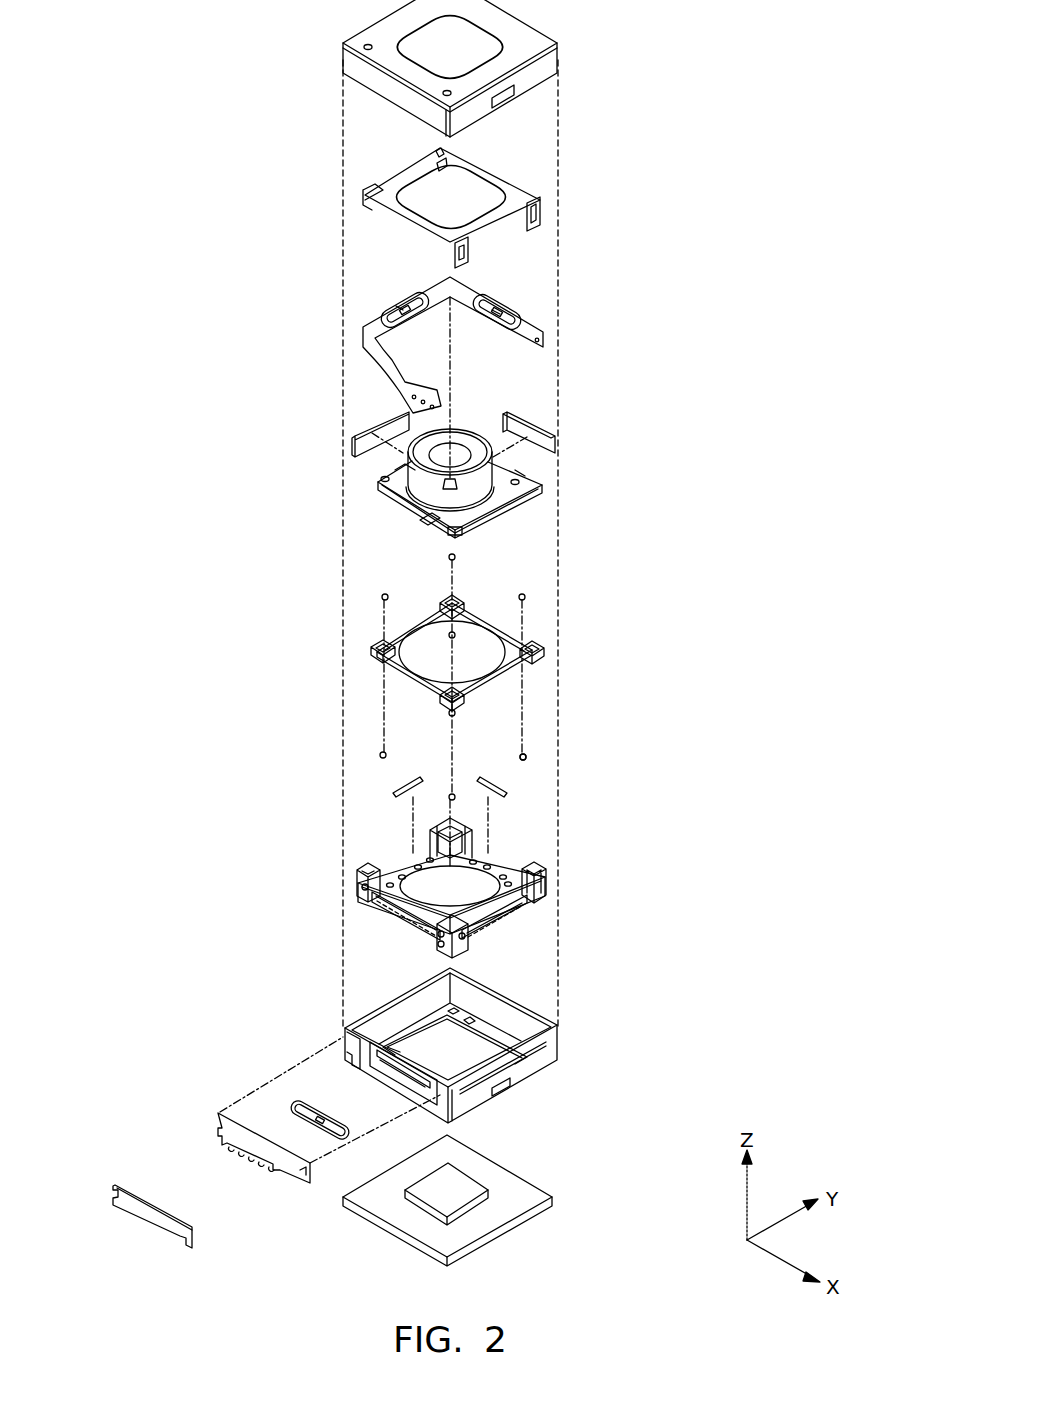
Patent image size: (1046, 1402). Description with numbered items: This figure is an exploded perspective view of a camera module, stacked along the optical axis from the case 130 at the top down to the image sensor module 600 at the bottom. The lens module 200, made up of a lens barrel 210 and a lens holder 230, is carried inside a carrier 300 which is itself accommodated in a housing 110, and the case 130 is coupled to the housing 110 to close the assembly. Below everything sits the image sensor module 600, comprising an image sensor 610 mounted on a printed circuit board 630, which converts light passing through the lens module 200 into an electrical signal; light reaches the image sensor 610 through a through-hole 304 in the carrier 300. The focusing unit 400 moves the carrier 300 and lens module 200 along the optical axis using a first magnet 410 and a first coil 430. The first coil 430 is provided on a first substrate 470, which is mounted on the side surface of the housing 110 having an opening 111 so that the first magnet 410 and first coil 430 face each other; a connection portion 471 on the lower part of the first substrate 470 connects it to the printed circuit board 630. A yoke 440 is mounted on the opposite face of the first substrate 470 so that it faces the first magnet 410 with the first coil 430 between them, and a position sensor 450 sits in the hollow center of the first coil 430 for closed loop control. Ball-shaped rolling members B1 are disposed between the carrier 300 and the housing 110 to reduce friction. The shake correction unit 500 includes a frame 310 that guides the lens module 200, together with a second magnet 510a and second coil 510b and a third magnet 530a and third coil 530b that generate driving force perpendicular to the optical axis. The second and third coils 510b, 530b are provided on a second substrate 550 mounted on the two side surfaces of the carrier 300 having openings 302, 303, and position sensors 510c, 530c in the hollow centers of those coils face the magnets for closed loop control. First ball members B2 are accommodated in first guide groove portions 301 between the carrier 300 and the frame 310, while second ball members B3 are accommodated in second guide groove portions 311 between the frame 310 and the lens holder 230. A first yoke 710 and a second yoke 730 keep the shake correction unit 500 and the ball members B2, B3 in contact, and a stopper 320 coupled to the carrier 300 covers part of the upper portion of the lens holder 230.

The case 130 is at (530, 38).
The stopper 320 is at (525, 195).
The shake correction unit 500 is at (637, 329).
The second magnet 510a is at (375, 430).
The second coil 510b is at (387, 307).
The position sensor 510c is at (400, 303).
The third magnet 530a is at (537, 428).
The third coil 530b is at (510, 302).
The position sensor 530c is at (495, 318).
The second substrate 550 is at (363, 337).
The lens module 200 is at (626, 473).
The lens barrel 210 is at (493, 465).
The lens holder 230 is at (540, 492).
The second ball members B3 is at (527, 597).
The first ball members B2 is at (527, 757).
The rolling members B1 is at (363, 887).
The frame 310 is at (453, 653).
The second guide groove portions 311 is at (384, 646).
The first yoke 710 is at (416, 776).
The second yoke 730 is at (491, 776).
The carrier 300 is at (451, 899).
The first guide groove portions 301 is at (462, 838).
The opening 302 is at (398, 868).
The opening 303 is at (507, 867).
The through-hole 304 is at (458, 887).
The focusing unit 400 is at (288, 984).
The first magnet 410 is at (395, 915).
The first coil 430 is at (297, 1103).
The yoke 440 is at (135, 1203).
The position sensor 450 is at (323, 1112).
The first substrate 470 is at (218, 1115).
The connection portion 471 is at (240, 1160).
The housing 110 is at (480, 1045).
The opening 111 is at (503, 1088).
The image sensor module 600 is at (626, 1168).
The image sensor 610 is at (452, 1181).
The printed circuit board 630 is at (480, 1218).